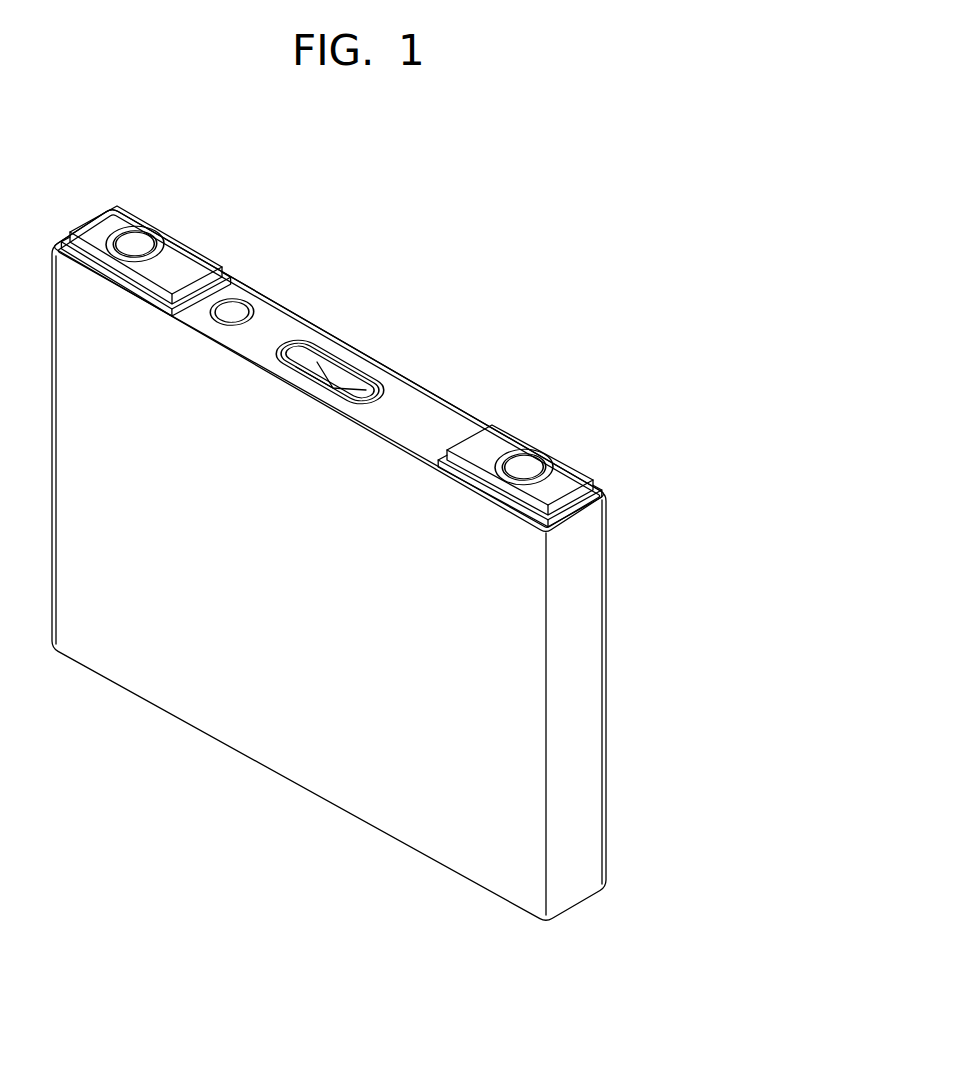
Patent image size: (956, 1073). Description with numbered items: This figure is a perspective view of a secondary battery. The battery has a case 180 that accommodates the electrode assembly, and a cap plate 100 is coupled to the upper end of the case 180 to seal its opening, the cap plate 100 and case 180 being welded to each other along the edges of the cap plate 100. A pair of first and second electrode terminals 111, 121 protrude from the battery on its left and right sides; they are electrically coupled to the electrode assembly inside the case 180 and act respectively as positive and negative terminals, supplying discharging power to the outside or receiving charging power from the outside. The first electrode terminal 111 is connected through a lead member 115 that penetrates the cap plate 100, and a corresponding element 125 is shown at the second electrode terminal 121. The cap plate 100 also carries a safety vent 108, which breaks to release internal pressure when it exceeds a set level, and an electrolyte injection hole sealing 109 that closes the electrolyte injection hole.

The cap plate 100 is at (425, 405).
The safety vent 108 is at (337, 380).
The electrolyte injection hole sealing 109 is at (232, 312).
The first electrode terminal 111 is at (500, 435).
The lead member 115 is at (527, 468).
The second electrode terminal 121 is at (193, 257).
The second terminal hole 125 is at (140, 243).
The case 180 is at (597, 673).